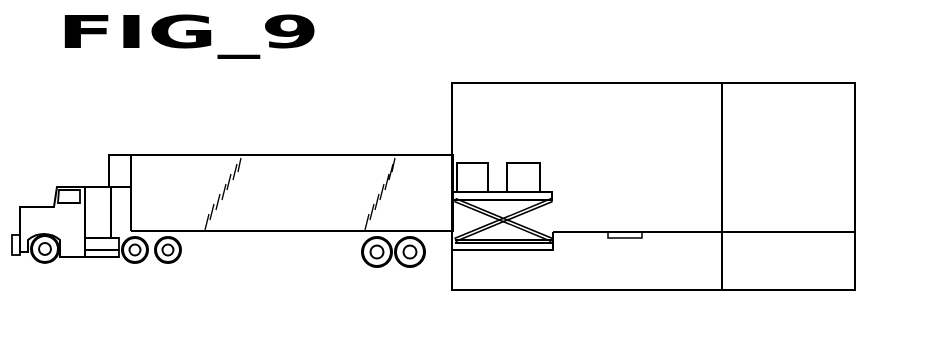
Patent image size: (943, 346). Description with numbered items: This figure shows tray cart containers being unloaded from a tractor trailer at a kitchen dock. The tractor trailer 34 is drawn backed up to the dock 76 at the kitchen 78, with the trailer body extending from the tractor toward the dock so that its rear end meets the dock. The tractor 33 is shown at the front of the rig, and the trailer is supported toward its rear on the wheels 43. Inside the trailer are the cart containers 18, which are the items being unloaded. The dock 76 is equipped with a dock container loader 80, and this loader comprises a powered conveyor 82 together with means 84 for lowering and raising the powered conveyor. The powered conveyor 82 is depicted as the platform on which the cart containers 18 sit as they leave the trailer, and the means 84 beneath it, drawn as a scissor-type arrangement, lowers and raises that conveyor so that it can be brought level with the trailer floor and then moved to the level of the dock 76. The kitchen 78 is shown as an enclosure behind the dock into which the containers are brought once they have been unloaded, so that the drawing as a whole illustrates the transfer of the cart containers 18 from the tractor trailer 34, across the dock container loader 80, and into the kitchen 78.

The tractor 33 is at (70, 188).
The tractor trailer 34 is at (236, 160).
The trailer wheels 43 is at (408, 267).
The cart containers 18 is at (476, 156).
The powered conveyor 82 is at (549, 192).
The dock container loader 80 is at (555, 198).
The means for lowering and raising the powered conveyor 84 is at (496, 228).
The dock 76 is at (592, 231).
The kitchen 78 is at (798, 215).